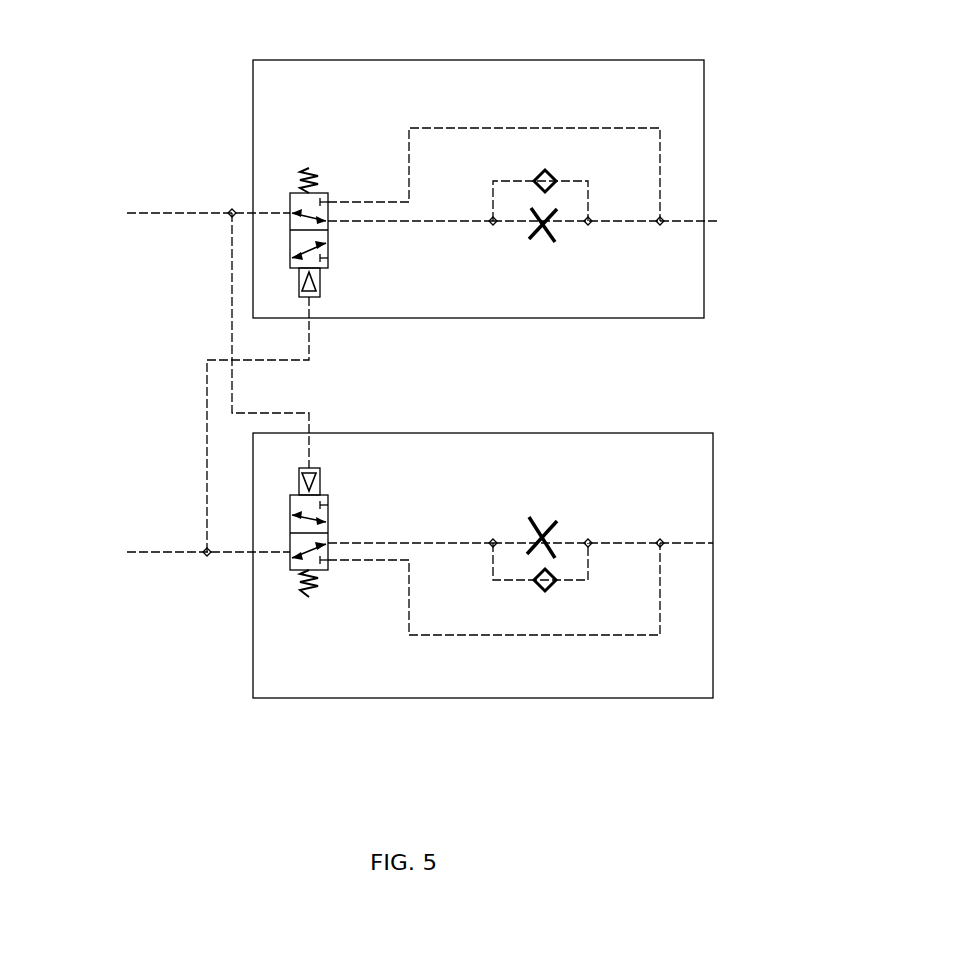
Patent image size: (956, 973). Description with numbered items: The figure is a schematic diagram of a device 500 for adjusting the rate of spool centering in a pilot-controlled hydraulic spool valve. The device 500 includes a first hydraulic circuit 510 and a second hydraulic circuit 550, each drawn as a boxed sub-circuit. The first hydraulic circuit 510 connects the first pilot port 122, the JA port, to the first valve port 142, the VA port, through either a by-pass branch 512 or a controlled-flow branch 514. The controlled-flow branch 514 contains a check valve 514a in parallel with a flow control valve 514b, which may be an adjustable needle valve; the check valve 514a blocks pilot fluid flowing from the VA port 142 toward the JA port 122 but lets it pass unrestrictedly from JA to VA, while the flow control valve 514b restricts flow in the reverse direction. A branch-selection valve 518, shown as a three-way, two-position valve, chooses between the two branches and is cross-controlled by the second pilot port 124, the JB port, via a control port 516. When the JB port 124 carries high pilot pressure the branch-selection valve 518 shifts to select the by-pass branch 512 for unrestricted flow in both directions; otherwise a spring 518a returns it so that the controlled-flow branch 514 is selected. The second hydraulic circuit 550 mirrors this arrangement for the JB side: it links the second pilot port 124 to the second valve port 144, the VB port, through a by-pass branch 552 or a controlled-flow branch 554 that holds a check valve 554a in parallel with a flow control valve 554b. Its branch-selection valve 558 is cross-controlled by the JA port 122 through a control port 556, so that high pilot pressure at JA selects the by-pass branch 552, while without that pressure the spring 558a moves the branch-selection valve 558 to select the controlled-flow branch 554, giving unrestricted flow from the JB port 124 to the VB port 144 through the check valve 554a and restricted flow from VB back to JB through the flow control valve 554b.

The device 500 is at (132, 65).
The first hydraulic circuit 510 is at (704, 93).
The second hydraulic circuit 550 is at (713, 683).
The by-pass branch 512 is at (533, 128).
The controlled-flow branch 514 is at (434, 226).
The check valve 514a is at (536, 176).
The flow control valve 514b is at (530, 215).
The control port 516 is at (312, 300).
The branch-selection valve 518 is at (333, 263).
The spring 518a is at (313, 168).
The by-pass branch 552 is at (537, 632).
The controlled-flow branch 554 is at (434, 540).
The check valve 554a is at (532, 585).
The flow control valve 554b is at (550, 544).
The control port 556 is at (312, 465).
The branch-selection valve 558 is at (333, 508).
The spring 558a is at (311, 597).
The first pilot port 122 is at (157, 210).
The second pilot port 124 is at (140, 548).
The first valve port 142 is at (712, 223).
The second valve port 144 is at (713, 541).